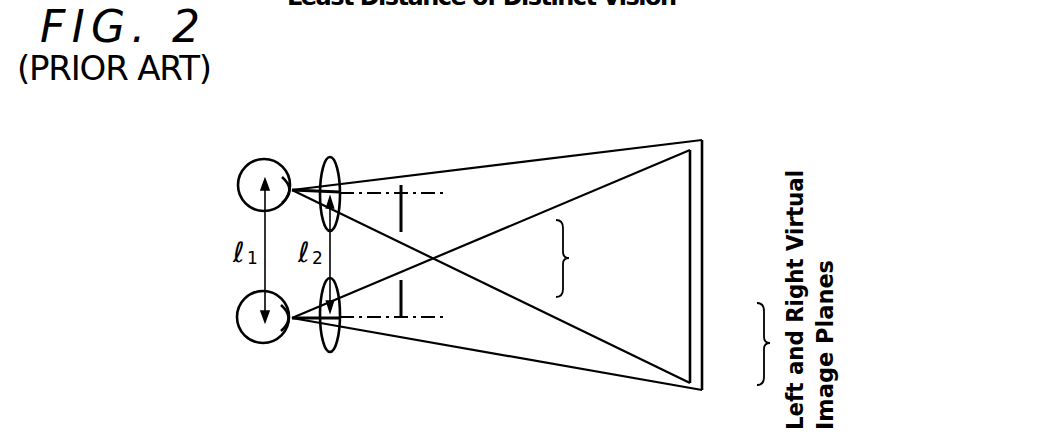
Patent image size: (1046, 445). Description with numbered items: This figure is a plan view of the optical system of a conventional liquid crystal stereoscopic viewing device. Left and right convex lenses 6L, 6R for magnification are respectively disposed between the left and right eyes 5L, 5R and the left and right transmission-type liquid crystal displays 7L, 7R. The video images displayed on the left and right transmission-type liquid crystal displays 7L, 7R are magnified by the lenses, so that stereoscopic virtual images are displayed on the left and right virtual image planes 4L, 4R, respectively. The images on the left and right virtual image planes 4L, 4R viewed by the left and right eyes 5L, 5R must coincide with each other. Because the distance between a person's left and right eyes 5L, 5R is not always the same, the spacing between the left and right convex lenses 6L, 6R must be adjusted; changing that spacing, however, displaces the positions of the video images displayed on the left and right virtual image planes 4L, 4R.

The left eye 5L is at (240, 172).
The right eye 5R is at (262, 343).
The left convex lens 6L is at (333, 157).
The right convex lens 6R is at (328, 352).
The left transmission-type liquid crystal display 7L is at (403, 212).
The right transmission-type liquid crystal display 7R is at (403, 297).
The left virtual image plane 4L is at (703, 318).
The right virtual image plane 4R is at (691, 360).